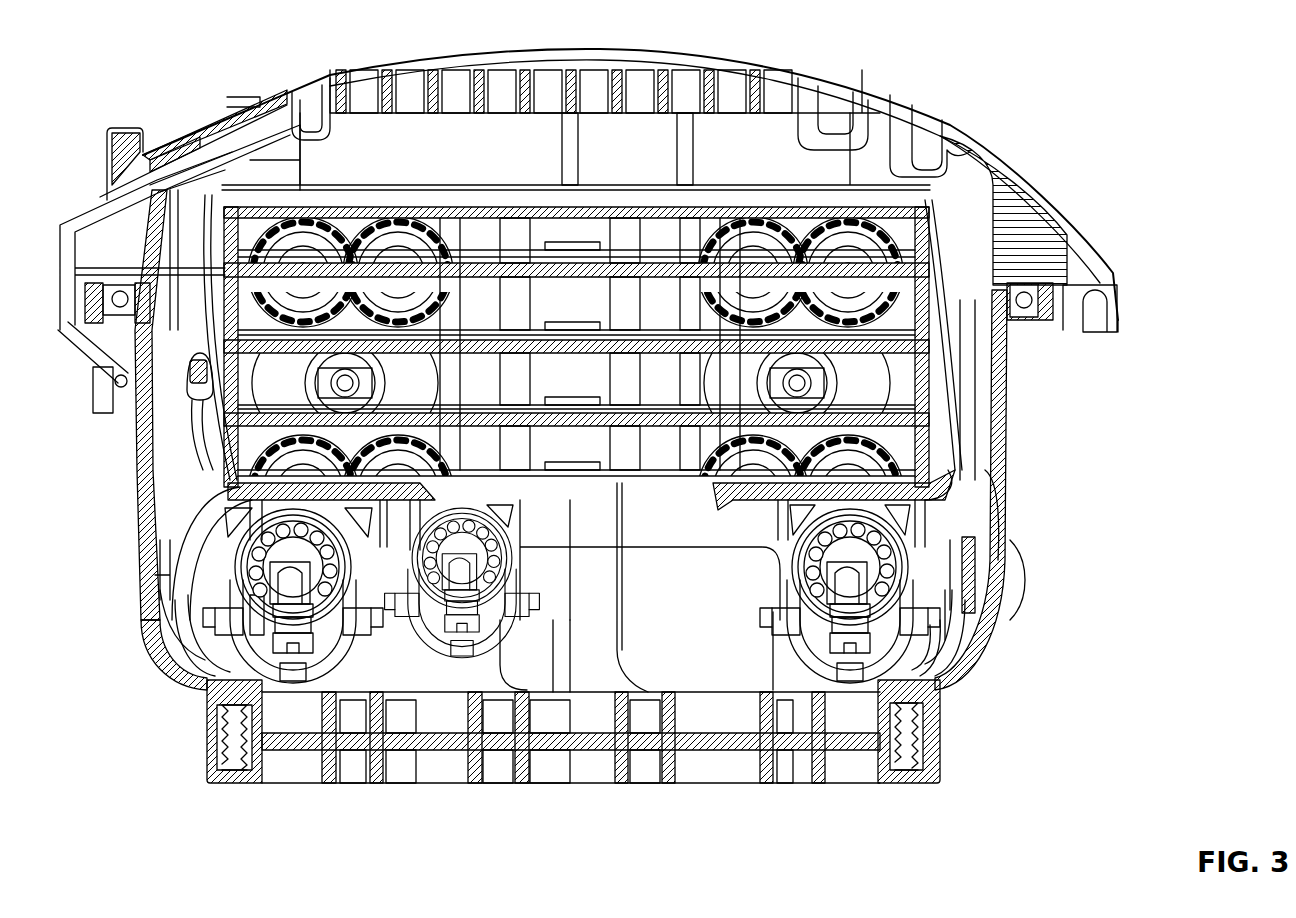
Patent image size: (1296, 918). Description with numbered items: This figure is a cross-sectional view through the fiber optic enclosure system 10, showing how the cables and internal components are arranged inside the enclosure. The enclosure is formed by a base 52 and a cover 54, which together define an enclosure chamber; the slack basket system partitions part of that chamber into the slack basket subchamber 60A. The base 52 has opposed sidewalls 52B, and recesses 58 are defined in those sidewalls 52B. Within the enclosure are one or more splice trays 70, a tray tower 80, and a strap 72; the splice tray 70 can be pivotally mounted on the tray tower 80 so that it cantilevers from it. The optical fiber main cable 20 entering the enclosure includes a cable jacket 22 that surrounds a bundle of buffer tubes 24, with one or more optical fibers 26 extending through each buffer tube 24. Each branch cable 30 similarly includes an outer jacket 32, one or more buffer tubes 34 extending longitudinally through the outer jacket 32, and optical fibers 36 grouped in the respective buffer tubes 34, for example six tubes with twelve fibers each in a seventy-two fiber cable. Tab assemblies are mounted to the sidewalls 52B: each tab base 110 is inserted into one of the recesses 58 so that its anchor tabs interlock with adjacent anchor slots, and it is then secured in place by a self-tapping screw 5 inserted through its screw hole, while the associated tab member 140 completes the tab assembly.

The fiber optic enclosure system 10 is at (130, 68).
The splice tray 70 is at (387, 207).
The cover 54 is at (790, 84).
The tab member 140 is at (985, 640).
The strap 72 is at (197, 413).
The sidewalls 52B is at (148, 523).
The recesses 58 is at (155, 583).
The cable jacket 22 is at (190, 655).
The optical fiber main cable 20 is at (205, 690).
The buffer tubes 24 is at (195, 655).
The optical fibers 26 is at (245, 635).
The self-tapping screw 5 is at (242, 775).
The outer jacket 32 is at (335, 615).
The buffer tubes 34 is at (415, 615).
The optical fibers 36 is at (450, 615).
The branch cable 30 is at (562, 600).
The tray tower 80 is at (607, 667).
The slack basket subchamber 60A is at (717, 655).
The base 52 is at (810, 733).
The tab base 110 is at (950, 658).